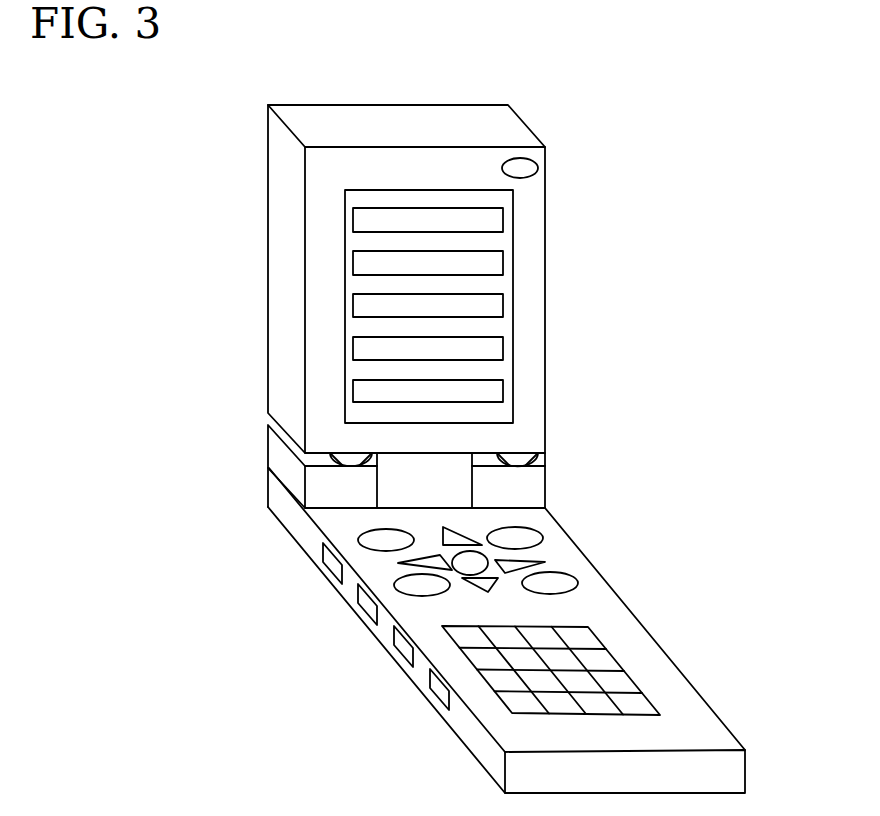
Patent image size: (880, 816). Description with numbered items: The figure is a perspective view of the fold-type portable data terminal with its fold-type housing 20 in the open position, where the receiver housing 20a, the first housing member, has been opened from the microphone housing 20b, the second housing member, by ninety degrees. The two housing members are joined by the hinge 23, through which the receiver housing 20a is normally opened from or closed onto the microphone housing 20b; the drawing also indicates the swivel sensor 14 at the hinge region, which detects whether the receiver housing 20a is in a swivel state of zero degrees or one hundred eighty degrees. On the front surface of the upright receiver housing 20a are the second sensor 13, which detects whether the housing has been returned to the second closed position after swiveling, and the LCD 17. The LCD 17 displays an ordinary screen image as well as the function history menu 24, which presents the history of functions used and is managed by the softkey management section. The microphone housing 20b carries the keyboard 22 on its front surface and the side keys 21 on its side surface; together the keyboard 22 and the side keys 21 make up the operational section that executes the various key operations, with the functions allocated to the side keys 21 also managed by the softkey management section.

The fold-type housing 20 is at (513, 123).
The receiver housing 20a is at (523, 315).
The microphone housing 20b is at (637, 638).
The second sensor 13 is at (525, 170).
The LCD 17 is at (343, 330).
The function history menu 24 is at (357, 263).
The hinge 23 is at (267, 442).
The swivel sensor 14 is at (350, 453).
The side keys 21 is at (367, 603).
The keyboard 22 is at (620, 682).